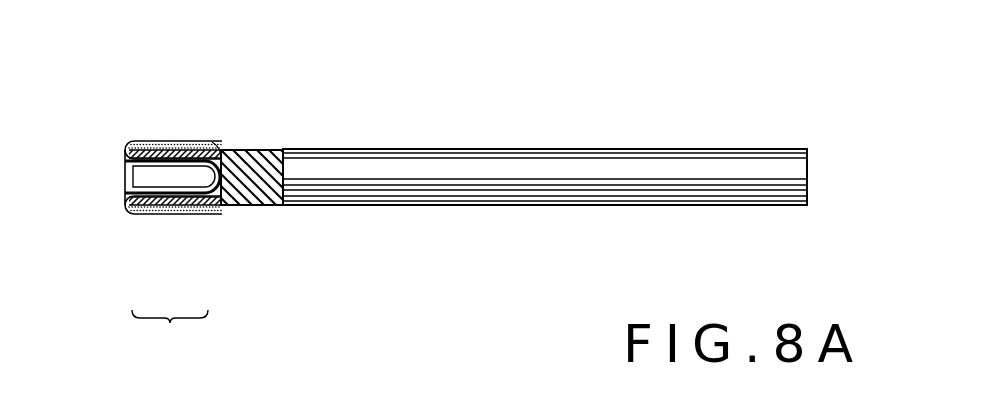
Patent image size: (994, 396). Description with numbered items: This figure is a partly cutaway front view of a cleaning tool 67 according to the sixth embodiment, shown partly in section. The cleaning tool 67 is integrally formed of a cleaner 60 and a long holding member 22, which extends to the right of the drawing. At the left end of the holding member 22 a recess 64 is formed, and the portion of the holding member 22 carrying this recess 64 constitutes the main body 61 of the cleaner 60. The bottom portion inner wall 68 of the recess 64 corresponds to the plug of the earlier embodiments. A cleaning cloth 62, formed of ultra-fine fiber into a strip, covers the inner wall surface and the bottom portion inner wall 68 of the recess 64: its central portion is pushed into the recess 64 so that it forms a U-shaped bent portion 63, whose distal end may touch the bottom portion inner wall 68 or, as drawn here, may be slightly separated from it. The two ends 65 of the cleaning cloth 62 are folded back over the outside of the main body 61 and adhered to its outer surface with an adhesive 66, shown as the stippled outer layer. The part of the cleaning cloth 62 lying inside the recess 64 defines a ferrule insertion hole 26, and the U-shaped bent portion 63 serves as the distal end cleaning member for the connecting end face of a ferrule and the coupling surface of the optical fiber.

The holding member 22 is at (543, 206).
The ferrule insertion hole 26 is at (150, 178).
The cleaner 60 is at (170, 330).
The main body 61 is at (182, 141).
The cleaning cloth 62 is at (143, 126).
The U-shaped bent portion 63 is at (235, 149).
The recess 64 is at (227, 208).
The two ends 65 is at (170, 141).
The adhesive 66 is at (145, 215).
The cleaning tool 67 is at (463, 42).
The bottom portion inner wall 68 is at (214, 141).